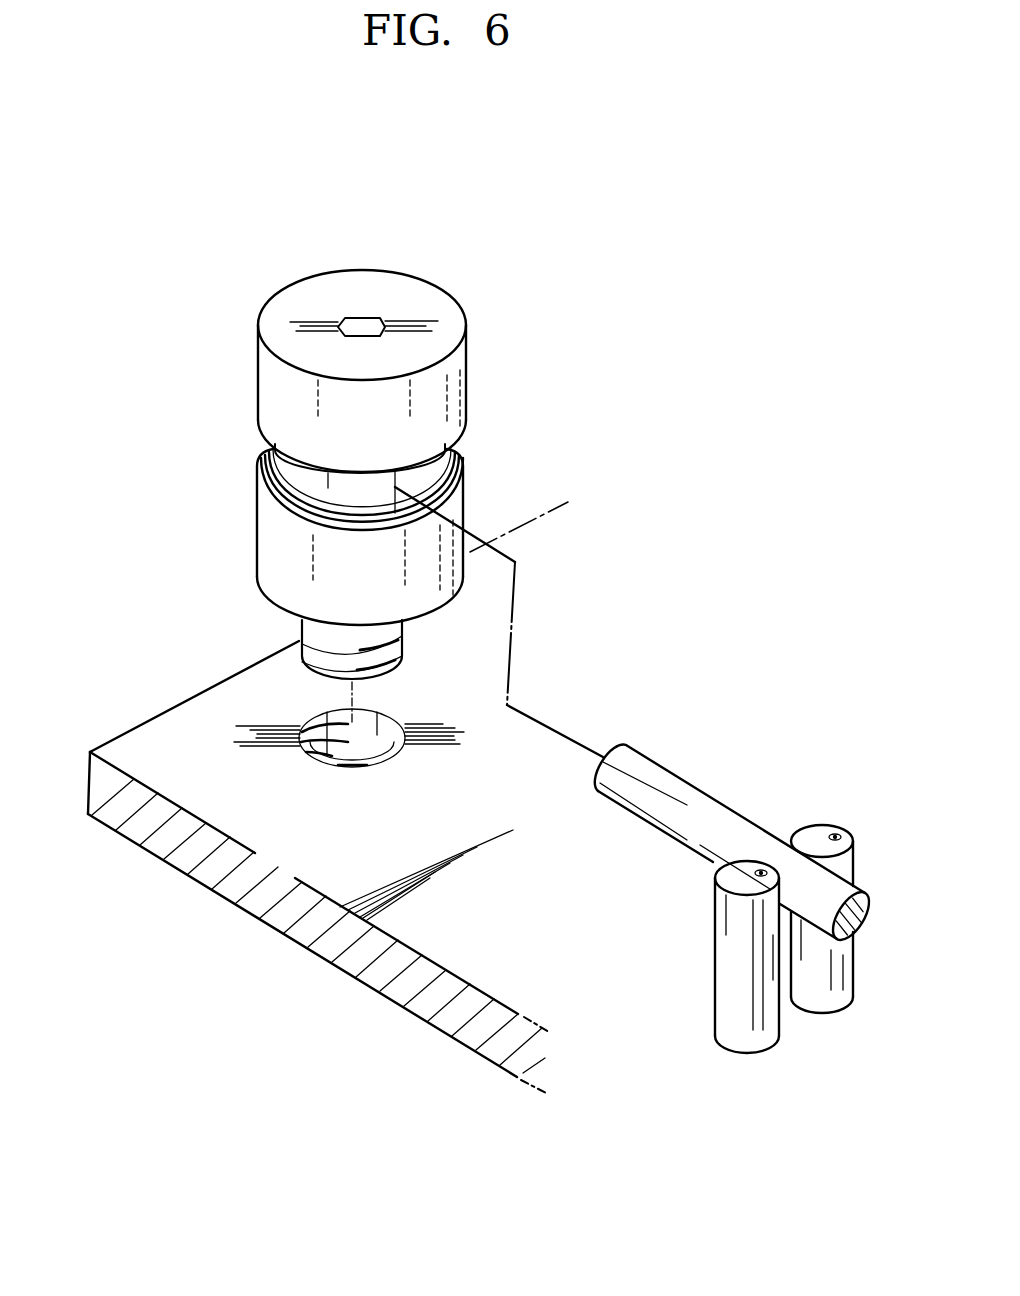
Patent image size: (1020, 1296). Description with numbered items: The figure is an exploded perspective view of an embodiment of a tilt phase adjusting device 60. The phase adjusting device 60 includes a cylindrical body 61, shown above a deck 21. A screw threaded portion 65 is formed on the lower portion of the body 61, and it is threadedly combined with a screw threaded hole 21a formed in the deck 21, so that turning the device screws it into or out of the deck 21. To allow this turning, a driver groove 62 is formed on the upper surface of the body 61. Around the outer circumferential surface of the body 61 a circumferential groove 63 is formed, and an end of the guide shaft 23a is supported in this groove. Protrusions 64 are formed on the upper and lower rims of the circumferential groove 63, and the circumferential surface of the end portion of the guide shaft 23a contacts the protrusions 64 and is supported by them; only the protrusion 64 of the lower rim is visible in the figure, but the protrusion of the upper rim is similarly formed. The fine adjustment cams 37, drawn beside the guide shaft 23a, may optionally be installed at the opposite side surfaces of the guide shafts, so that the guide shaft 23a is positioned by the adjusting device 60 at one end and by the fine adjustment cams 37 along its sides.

The phase adjusting device 60 is at (198, 203).
The cylindrical body 61 is at (460, 320).
The driver groove 62 is at (365, 323).
The circumferential groove 63 is at (415, 485).
The protrusion 64 is at (281, 503).
The screw threaded portion 65 is at (302, 631).
The deck 21 is at (408, 982).
The screw threaded hole 21a is at (317, 757).
The guide shaft 23a is at (727, 823).
The fine adjustment cam 37 is at (823, 833).